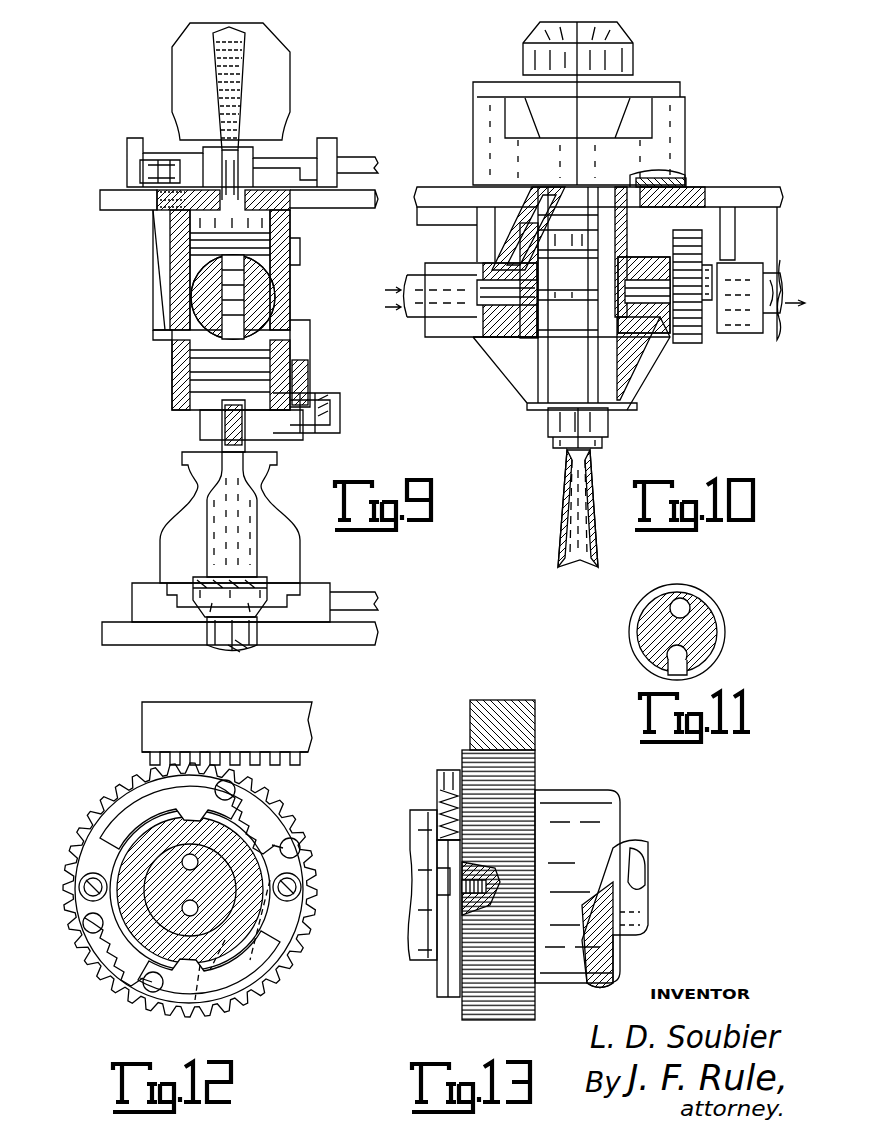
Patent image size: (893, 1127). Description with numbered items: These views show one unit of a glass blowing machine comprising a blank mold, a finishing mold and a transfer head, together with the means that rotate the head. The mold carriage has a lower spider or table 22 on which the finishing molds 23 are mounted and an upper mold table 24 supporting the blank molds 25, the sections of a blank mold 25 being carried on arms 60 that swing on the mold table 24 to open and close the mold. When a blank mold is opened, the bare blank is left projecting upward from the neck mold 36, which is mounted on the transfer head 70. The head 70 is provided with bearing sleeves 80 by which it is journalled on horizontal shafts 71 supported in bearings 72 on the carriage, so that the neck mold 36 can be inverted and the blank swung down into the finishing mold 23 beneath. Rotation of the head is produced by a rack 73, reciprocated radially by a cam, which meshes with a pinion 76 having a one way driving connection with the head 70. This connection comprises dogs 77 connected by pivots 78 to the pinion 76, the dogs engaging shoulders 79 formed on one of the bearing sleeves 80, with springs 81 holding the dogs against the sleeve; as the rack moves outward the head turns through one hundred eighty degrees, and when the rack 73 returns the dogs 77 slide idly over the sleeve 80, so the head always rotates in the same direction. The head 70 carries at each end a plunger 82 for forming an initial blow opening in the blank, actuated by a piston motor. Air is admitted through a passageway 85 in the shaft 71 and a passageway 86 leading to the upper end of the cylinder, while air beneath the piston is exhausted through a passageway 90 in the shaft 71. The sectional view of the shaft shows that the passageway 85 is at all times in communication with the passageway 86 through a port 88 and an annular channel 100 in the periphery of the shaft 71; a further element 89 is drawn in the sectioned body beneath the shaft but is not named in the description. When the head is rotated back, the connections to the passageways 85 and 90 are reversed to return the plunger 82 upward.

In FIG. 9, the lower spider or table 22 is at (104, 635).
In FIG. 9, the finishing mold 23 is at (186, 500).
In FIG. 9, the upper mold table 24 is at (104, 192).
In FIG. 9, the blank mold 25 is at (278, 78).
In FIG. 10, the blank mold 25 is at (625, 60).
In FIG. 9, the neck mold 36 is at (258, 165).
In FIG. 10, the neck mold 36 is at (598, 422).
In FIG. 9, the arm 60 is at (355, 162).
In FIG. 9, the transfer head 70 is at (160, 293).
In FIG. 10, the horizontal shaft 71 is at (420, 322).
In FIG. 11, the horizontal shaft 71 is at (645, 620).
In FIG. 12, the horizontal shaft 71 is at (226, 905).
In FIG. 13, the horizontal shaft 71 is at (618, 848).
In FIG. 10, the bearing 72 is at (462, 336).
In FIG. 10, the rack 73 is at (690, 225).
In FIG. 12, the rack 73 is at (290, 712).
In FIG. 13, the rack 73 is at (472, 710).
In FIG. 10, the pinion 76 is at (695, 342).
In FIG. 12, the pinion 76 is at (302, 826).
In FIG. 13, the pinion 76 is at (475, 762).
In FIG. 12, the dog 77 is at (110, 823).
In FIG. 13, the dog 77 is at (440, 980).
In FIG. 12, the pivot 78 is at (77, 886).
In FIG. 13, the pivot 78 is at (440, 885).
In FIG. 12, the shoulder 79 is at (185, 812).
In FIG. 10, the bearing sleeve 80 is at (648, 258).
In FIG. 12, the bearing sleeve 80 is at (242, 930).
In FIG. 13, the bearing sleeve 80 is at (572, 800).
In FIG. 12, the spring 81 is at (265, 812).
In FIG. 13, the spring 81 is at (440, 808).
In FIG. 9, the plunger 82 is at (236, 150).
In FIG. 10, the passageway 85 is at (410, 282).
In FIG. 11, the passageway 85 is at (668, 656).
In FIG. 10, the passageway 86 is at (528, 222).
In FIG. 10, the port 88 is at (485, 262).
In FIG. 11, the port 88 is at (680, 668).
In FIG. 10, the valve body 89 is at (497, 340).
In FIG. 11, the passageway 90 is at (692, 604).
In FIG. 11, the annular channel 100 is at (726, 633).